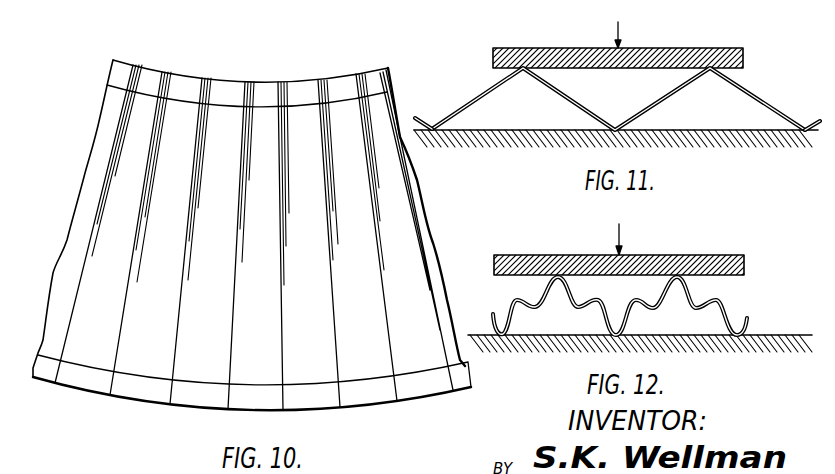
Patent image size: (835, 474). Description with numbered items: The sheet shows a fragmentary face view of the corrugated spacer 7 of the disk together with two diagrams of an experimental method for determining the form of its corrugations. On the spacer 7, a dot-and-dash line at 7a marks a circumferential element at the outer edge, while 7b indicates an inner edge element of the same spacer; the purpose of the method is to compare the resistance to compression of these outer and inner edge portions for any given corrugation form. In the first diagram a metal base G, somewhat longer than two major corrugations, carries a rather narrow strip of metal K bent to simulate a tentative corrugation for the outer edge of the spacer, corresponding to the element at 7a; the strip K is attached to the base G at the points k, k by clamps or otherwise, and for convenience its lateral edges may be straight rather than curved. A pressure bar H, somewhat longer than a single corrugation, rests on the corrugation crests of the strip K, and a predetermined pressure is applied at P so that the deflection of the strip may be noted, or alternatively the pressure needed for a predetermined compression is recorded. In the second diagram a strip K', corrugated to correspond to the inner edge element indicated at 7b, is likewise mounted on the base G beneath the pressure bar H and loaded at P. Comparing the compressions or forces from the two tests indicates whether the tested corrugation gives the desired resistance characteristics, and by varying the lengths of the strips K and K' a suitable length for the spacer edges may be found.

In FIG. 10, the corrugated spacer 7 is at (94, 167).
In FIG. 10, the outer edge element of spacer 7a is at (470, 363).
In FIG. 10, the inner edge element of spacer 7b is at (401, 90).
In FIG. 11, the applied pressure P is at (614, 24).
In FIG. 12, the applied pressure P is at (616, 228).
In FIG. 11, the pressure bar H is at (665, 57).
In FIG. 12, the pressure bar H is at (706, 264).
In FIG. 11, the corrugated metal strip K is at (618, 99).
In FIG. 11, the attachment points k is at (432, 127).
In FIG. 11, the metal base G is at (752, 143).
In FIG. 12, the metal base G is at (767, 347).
In FIG. 12, the corrugated metal strip for inner edge K' is at (625, 306).